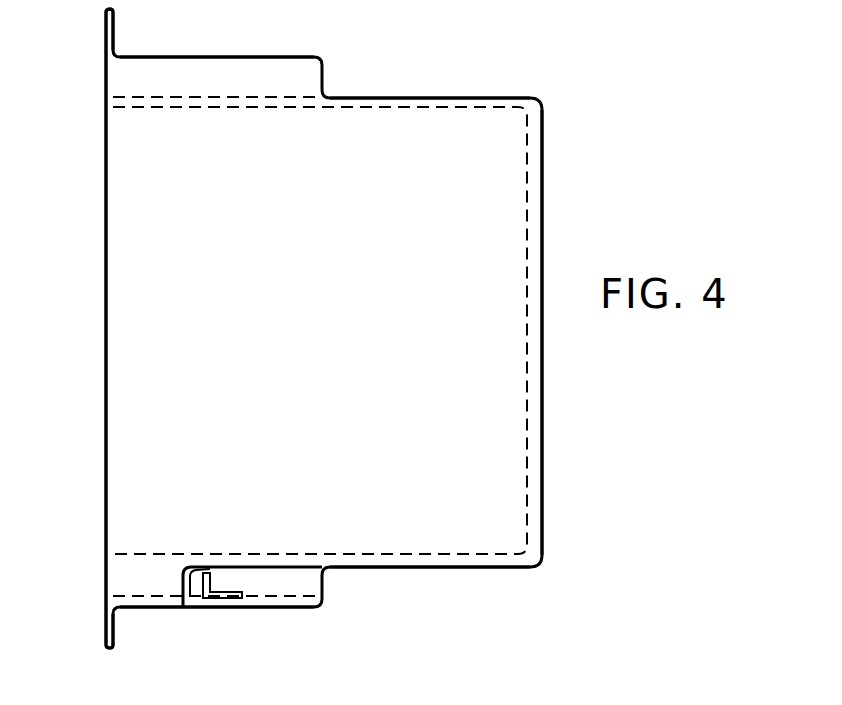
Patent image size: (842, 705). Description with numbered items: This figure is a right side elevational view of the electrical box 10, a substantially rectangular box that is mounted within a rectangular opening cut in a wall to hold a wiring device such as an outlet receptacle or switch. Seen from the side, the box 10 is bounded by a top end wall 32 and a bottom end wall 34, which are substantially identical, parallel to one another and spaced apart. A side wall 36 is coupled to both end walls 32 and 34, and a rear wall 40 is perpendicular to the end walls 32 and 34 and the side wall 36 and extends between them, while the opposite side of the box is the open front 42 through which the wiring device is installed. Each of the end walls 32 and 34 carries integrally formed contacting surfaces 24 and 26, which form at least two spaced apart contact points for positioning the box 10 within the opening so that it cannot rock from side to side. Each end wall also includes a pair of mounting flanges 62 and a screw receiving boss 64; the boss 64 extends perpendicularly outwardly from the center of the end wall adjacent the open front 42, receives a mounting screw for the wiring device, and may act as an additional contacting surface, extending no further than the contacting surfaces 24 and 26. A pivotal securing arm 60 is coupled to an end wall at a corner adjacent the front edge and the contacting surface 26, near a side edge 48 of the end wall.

The electrical box 10 is at (387, 63).
The contacting surface 24 is at (140, 607).
The contacting surface 26 is at (220, 57).
The top end wall 32 is at (440, 94).
The bottom end wall 34 is at (397, 576).
The side wall 36 is at (355, 312).
The rear wall 40 is at (550, 530).
The open front 42 is at (95, 360).
The side edge 48 is at (340, 97).
The securing arm 60 is at (218, 600).
The mounting flange 62 is at (113, 23).
The screw receiving boss 64 is at (196, 572).